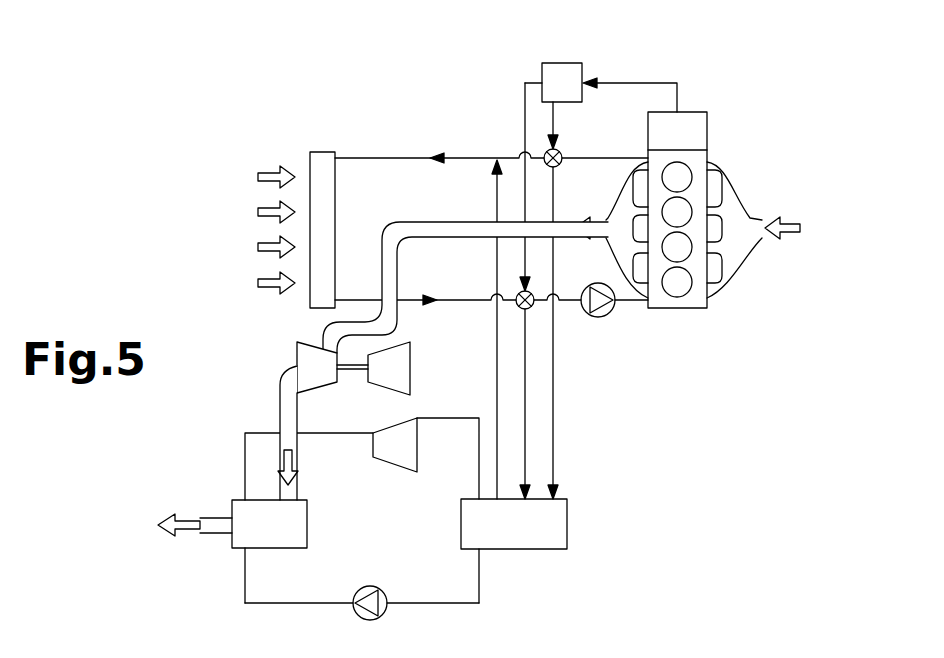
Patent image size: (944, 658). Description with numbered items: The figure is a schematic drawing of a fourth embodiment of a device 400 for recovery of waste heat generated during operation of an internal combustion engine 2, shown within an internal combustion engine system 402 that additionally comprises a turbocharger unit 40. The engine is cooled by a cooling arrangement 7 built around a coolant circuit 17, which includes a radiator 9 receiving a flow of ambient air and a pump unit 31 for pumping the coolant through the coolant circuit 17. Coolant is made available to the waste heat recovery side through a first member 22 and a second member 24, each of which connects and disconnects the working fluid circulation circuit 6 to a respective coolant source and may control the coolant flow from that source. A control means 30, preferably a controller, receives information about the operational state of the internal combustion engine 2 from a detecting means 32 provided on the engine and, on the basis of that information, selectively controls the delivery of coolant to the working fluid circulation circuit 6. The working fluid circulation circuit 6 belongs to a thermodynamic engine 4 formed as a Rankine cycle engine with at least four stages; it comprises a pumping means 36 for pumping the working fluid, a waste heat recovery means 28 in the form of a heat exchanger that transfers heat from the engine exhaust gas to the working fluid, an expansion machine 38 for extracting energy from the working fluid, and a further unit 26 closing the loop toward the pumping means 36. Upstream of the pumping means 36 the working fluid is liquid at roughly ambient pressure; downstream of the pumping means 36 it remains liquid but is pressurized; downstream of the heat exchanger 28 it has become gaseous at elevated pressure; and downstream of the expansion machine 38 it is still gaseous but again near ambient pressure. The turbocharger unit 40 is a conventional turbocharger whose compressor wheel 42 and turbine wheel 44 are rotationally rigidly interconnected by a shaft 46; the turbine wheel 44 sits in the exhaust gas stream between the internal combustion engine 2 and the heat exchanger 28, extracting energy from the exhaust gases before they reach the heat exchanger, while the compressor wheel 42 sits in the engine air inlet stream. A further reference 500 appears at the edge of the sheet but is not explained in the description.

The internal combustion engine 2 is at (700, 162).
The thermodynamic engine 4 is at (507, 592).
The working fluid circulation circuit 6 is at (417, 604).
The cooling arrangement 7 is at (346, 138).
The radiator 9 is at (310, 156).
The coolant circuit 17 is at (394, 146).
The first member 22 is at (561, 166).
The second member 24 is at (529, 307).
The condenser 26 is at (568, 542).
The waste heat recovery means 28 is at (233, 502).
The control means 30 is at (572, 67).
The pump unit 31 is at (610, 312).
The means for detecting the operational state 32 is at (697, 110).
The pumping means 36 is at (357, 616).
The expansion machine 38 is at (392, 470).
The turbocharger unit 40 is at (270, 348).
The compressor wheel 42 is at (405, 357).
The turbine wheel 44 is at (298, 368).
The shaft 46 is at (352, 378).
The device for recovery of waste heat 400 is at (768, 70).
The internal combustion engine system 402 is at (846, 98).
The reference 500 is at (786, 654).